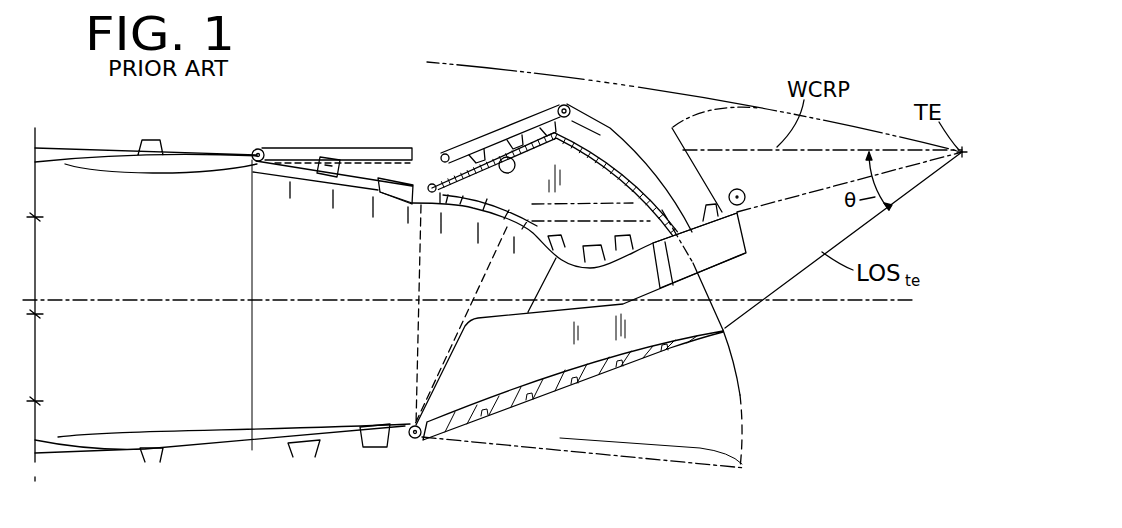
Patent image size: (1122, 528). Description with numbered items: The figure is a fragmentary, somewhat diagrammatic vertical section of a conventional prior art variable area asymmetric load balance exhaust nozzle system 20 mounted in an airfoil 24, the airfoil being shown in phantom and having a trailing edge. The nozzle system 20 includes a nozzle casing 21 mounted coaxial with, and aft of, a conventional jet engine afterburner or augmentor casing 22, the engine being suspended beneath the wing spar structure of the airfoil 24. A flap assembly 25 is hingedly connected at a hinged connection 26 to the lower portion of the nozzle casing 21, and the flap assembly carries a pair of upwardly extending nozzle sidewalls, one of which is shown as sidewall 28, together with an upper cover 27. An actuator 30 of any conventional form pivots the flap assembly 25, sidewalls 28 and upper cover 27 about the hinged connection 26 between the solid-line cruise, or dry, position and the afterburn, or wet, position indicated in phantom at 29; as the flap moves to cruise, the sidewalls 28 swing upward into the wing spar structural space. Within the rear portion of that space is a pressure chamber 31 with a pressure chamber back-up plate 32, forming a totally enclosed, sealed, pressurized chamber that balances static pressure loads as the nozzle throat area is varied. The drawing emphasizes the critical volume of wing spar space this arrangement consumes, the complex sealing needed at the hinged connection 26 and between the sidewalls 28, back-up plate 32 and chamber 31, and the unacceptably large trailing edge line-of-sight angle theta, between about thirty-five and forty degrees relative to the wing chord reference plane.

The exhaust nozzle system 20 is at (748, 342).
The nozzle casing 21 is at (272, 170).
The augmentor casing 22 is at (207, 436).
The airfoil 24 is at (606, 64).
The flap assembly 25 is at (630, 369).
The hinged connection 26 is at (408, 440).
The upper cover 27 is at (500, 155).
The nozzle sidewall 28 is at (687, 310).
The afterburn position 29 is at (733, 464).
The actuator 30 is at (350, 150).
The pressure chamber 31 is at (584, 168).
The pressure chamber back-up plate 32 is at (628, 168).